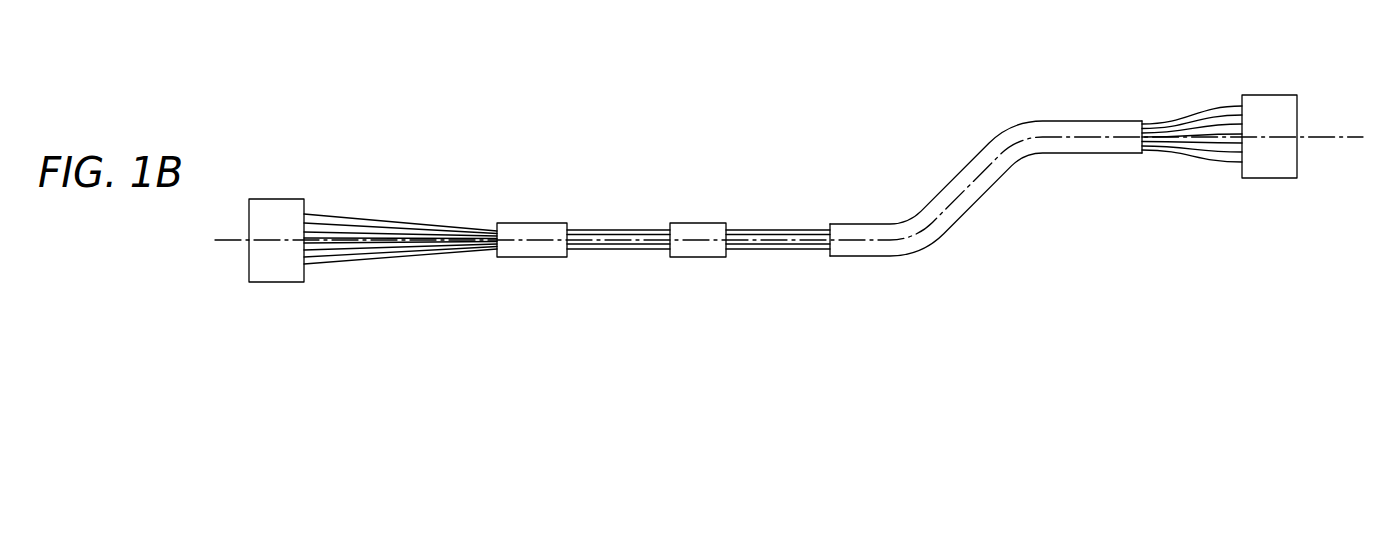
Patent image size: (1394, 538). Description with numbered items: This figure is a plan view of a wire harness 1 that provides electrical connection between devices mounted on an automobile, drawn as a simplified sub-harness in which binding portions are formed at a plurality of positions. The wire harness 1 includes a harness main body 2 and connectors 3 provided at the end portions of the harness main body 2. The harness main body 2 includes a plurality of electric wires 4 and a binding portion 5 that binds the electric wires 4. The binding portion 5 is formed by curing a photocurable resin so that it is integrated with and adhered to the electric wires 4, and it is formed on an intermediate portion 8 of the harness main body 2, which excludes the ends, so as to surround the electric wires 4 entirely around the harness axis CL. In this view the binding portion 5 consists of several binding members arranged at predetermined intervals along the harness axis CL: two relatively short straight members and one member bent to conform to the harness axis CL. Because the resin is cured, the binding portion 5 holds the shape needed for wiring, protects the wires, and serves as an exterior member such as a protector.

The wire harness 1 is at (789, 182).
The harness main body 2 is at (698, 222).
The connector 3 is at (276, 210).
The electric wire 4 is at (1208, 115).
The binding portion 5 is at (819, 238).
The intermediate portion 8 is at (620, 254).
The harness axis CL is at (1335, 140).